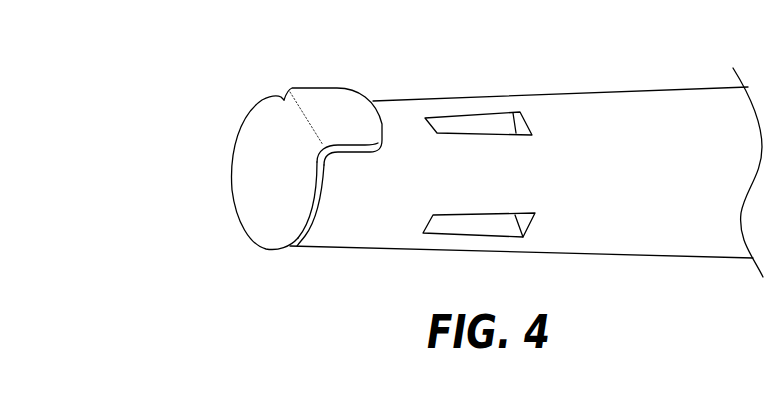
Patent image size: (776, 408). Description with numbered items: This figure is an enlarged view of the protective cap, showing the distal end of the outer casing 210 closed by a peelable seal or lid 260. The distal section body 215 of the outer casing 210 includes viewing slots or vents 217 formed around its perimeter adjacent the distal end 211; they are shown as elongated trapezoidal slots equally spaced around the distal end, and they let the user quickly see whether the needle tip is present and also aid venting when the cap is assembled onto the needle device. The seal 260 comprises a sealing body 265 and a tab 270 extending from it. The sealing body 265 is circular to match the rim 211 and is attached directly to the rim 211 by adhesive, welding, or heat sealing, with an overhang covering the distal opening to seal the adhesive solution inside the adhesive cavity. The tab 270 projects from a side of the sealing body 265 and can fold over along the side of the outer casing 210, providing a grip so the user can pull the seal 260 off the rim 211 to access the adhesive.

The outer casing 210 is at (526, 180).
The rim 211 is at (297, 243).
The distal section body 215 is at (640, 90).
The viewing slots 217 is at (473, 116).
The peelable seal 260 is at (275, 180).
The sealing body 265 is at (245, 165).
The tab 270 is at (330, 102).